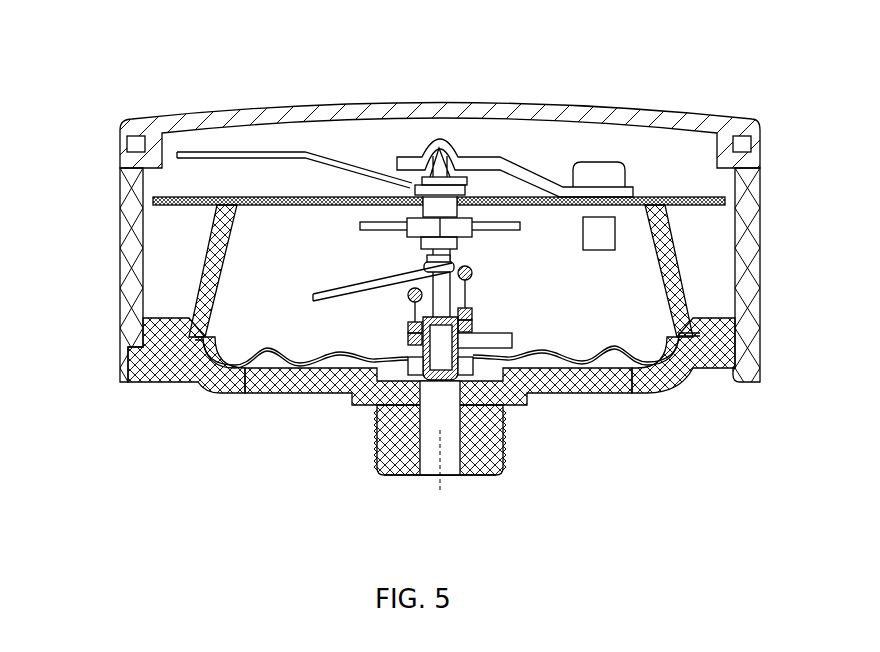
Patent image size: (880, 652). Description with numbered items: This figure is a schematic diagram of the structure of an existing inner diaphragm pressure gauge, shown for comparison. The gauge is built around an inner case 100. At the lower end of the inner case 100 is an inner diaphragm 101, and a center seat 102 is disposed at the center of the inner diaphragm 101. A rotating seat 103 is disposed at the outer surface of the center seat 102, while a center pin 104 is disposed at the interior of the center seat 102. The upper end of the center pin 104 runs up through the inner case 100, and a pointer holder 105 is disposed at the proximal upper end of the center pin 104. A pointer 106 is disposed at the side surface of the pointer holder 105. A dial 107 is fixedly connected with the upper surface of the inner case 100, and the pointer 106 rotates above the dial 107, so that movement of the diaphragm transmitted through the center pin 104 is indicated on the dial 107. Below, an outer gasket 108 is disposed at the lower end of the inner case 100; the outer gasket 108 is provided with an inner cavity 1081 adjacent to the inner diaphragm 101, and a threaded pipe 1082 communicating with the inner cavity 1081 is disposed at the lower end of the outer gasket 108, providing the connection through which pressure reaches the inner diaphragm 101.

The inner case 100 is at (143, 200).
The inner diaphragm 101 is at (640, 395).
The center seat 102 is at (375, 437).
The rotating seat 103 is at (532, 393).
The center pin 104 is at (440, 302).
The pointer holder 105 is at (433, 203).
The pointer 106 is at (237, 157).
The dial 107 is at (205, 197).
The outer gasket 108 is at (193, 385).
The inner cavity 1081 is at (242, 385).
The threaded pipe 1082 is at (453, 447).